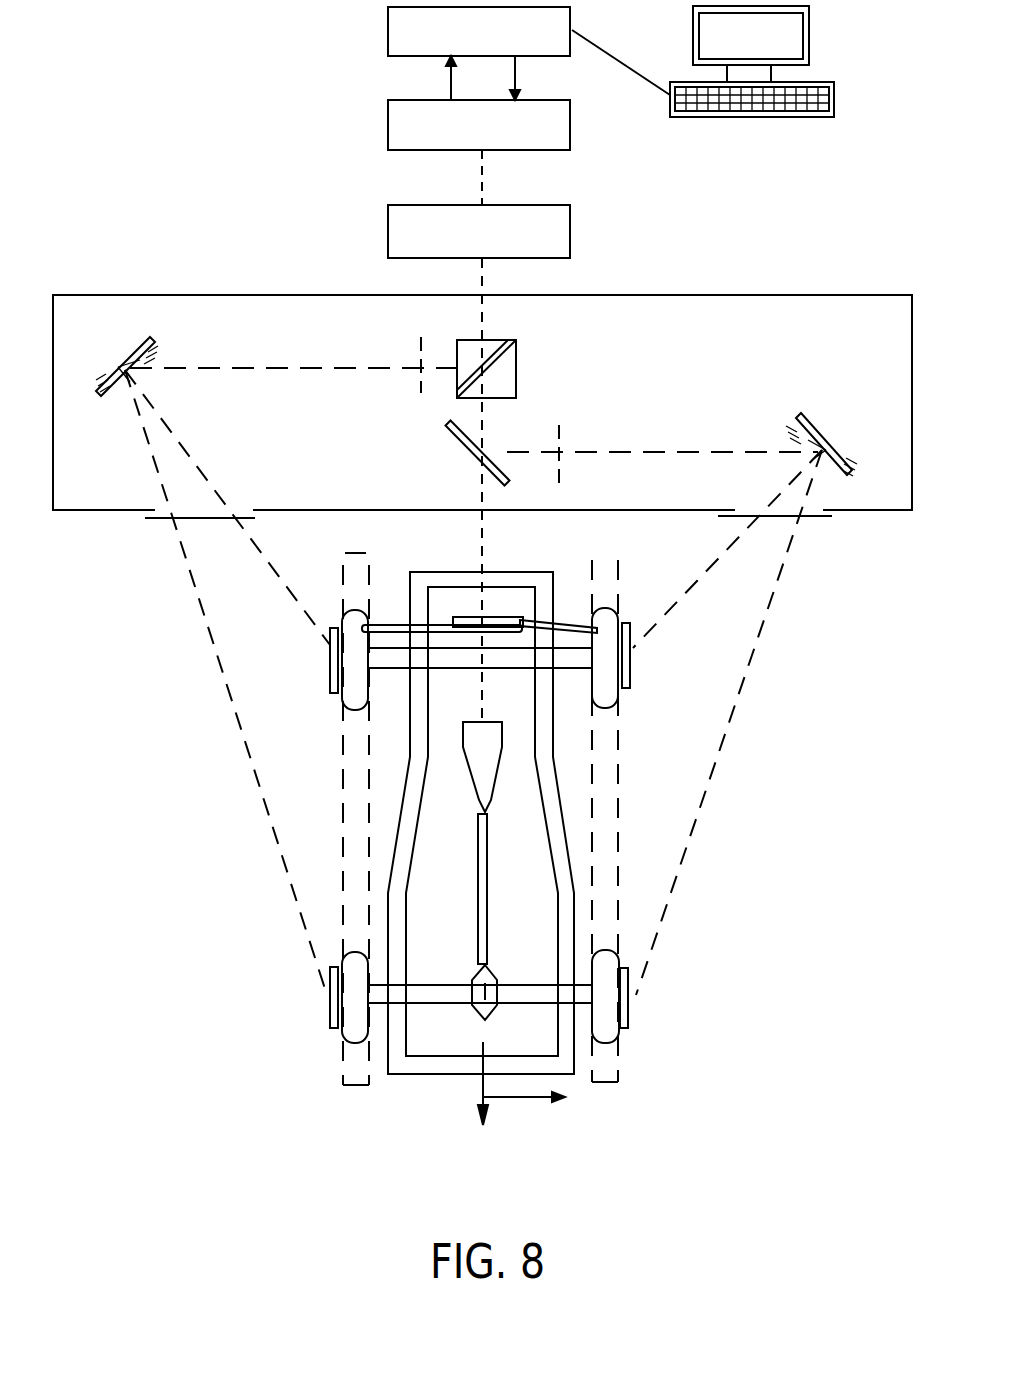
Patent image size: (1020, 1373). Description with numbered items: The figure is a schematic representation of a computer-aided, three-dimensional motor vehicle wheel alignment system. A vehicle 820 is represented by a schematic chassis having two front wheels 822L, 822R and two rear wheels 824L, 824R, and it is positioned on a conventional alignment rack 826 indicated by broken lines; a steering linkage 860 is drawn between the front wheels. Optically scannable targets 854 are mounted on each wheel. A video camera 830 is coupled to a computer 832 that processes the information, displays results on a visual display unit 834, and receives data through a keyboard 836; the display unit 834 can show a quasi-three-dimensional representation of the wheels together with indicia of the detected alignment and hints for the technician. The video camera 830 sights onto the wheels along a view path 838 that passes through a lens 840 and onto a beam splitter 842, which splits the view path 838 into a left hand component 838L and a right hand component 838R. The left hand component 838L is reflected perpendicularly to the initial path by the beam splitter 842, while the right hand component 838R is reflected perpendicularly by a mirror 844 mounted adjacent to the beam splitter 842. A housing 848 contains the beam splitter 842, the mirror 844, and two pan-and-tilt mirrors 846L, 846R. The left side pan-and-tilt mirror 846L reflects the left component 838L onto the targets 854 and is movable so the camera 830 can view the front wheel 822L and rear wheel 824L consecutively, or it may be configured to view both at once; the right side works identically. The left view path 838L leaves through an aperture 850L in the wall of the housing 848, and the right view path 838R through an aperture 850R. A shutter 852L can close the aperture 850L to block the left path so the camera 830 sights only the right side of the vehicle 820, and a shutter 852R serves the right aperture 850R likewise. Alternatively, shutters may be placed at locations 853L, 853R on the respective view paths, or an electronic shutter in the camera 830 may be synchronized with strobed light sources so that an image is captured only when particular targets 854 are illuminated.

The vehicle 820 is at (565, 815).
The left front wheel 822L is at (342, 700).
The right front wheel 822R is at (620, 695).
The left rear wheel 824L is at (342, 1040).
The right rear wheel 824R is at (620, 1030).
The alignment rack 826 is at (357, 553).
The video camera 830 is at (388, 126).
The computer 832 is at (388, 36).
The visual display unit 834 is at (809, 25).
The keyboard 836 is at (834, 100).
The view path 838 is at (482, 176).
The left hand component of view path 838L is at (380, 368).
The right hand component of view path 838R is at (580, 455).
The lens 840 is at (388, 244).
The beam splitter 842 is at (500, 343).
The mirror 844 is at (465, 453).
The left side pan-and-tilt mirror 846L is at (142, 345).
The right side pan-and-tilt mirror 846R is at (826, 428).
The housing 848 is at (680, 295).
The left aperture 850L is at (245, 510).
The right aperture 850R is at (836, 508).
The left shutter 852L is at (160, 520).
The right shutter 852R is at (812, 518).
The alternative left shutter location 853L is at (421, 350).
The alternative right shutter location 853R is at (559, 432).
The targets 854 is at (330, 660).
The steering linkage 860 is at (520, 622).